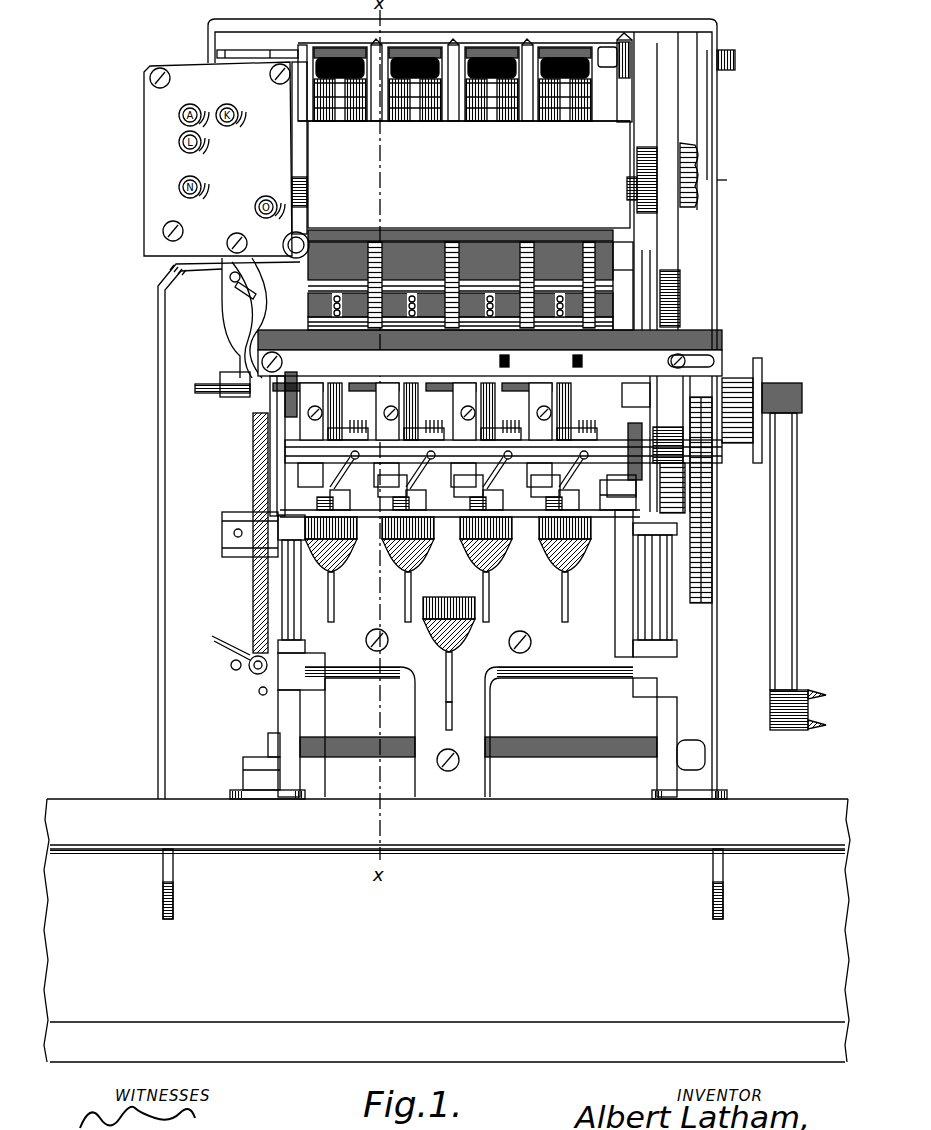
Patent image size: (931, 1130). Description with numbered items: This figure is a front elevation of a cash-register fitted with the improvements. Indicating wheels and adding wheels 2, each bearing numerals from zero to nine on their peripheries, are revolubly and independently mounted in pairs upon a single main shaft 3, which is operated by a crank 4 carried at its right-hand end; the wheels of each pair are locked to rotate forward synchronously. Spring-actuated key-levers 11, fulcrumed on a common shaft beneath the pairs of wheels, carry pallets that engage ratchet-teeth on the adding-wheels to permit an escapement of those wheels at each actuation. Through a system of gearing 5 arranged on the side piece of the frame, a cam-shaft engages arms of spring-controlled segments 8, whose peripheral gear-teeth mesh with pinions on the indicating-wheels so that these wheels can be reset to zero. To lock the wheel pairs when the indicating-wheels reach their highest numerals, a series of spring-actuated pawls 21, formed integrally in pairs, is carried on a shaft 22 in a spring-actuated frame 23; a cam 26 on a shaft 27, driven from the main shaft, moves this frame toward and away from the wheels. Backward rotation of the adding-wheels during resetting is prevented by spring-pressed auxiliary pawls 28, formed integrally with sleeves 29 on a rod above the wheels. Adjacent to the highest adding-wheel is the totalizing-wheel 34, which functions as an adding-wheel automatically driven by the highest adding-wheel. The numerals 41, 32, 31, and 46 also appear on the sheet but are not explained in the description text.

The knob 41 is at (316, 234).
The segment 8 is at (455, 216).
The cam plate 32 is at (264, 271).
The lever 31 is at (230, 281).
The sleeve 29 is at (268, 300).
The auxiliary pawl 28 is at (262, 318).
The rod 46 is at (228, 368).
The totalizing-wheel 34 is at (297, 394).
The spring-actuated frame 23 is at (260, 424).
The spring-actuated pawl 21 is at (337, 397).
The adding wheel 2 is at (551, 364).
The main shaft 3 is at (640, 400).
The shaft 22 is at (632, 441).
The shaft 27 is at (565, 466).
The key-lever 11 is at (405, 578).
The cam 26 is at (641, 482).
The system of gearing 5 is at (712, 510).
The crank 4 is at (797, 478).